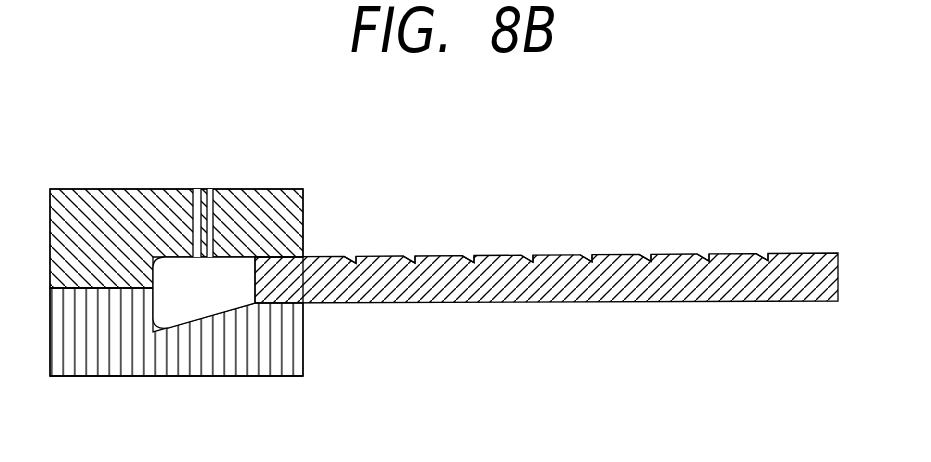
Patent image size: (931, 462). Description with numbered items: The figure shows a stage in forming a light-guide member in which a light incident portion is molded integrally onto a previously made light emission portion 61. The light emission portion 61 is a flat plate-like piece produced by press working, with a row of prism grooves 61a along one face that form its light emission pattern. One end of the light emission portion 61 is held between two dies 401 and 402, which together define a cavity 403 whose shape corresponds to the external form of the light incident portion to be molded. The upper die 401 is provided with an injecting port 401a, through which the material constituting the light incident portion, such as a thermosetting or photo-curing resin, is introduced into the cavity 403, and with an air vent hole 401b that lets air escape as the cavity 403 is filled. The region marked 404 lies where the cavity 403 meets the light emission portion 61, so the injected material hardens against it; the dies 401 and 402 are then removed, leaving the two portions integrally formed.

The die 401 is at (85, 198).
The injecting port 401a is at (194, 189).
The air vent hole 401b is at (213, 189).
The die 402 is at (100, 372).
The cavity 403 is at (190, 310).
The support surface 404 is at (270, 256).
The light emission portion 61 is at (670, 257).
The prism grooves 61a is at (531, 258).